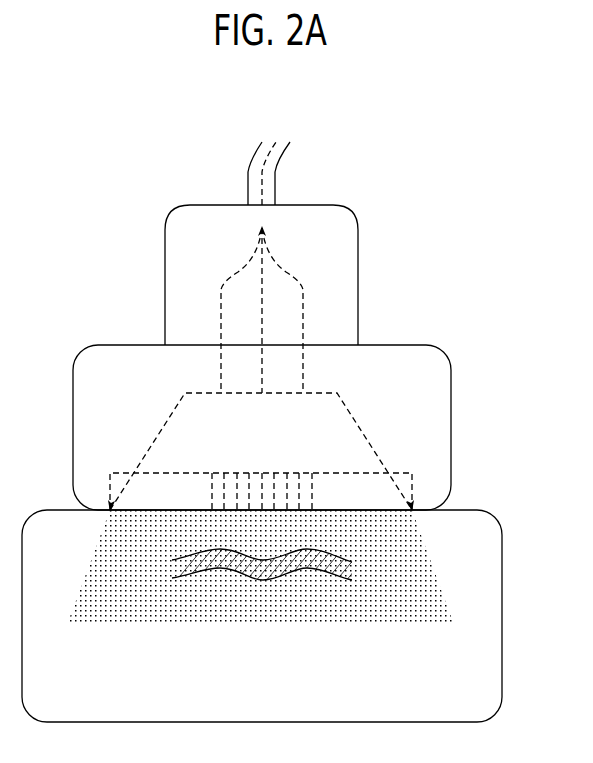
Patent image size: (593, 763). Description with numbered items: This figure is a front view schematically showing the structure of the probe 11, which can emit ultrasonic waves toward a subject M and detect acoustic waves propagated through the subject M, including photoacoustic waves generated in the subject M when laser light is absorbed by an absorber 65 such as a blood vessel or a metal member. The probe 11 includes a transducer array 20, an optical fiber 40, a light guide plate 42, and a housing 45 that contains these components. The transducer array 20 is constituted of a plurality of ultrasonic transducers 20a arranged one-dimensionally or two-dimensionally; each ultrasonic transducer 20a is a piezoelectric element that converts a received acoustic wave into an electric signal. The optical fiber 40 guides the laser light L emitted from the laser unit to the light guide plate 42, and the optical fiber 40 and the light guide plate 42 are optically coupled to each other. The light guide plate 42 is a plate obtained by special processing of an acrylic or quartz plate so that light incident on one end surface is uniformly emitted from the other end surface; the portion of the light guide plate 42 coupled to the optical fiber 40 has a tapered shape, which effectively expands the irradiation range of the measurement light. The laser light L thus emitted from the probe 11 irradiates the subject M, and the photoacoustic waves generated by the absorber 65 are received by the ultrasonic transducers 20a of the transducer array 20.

The probe 11 is at (125, 250).
The housing 45 is at (358, 292).
The optical fiber 40 is at (277, 253).
The light guide plate 42 is at (180, 398).
The transducer array 20 is at (125, 470).
The ultrasonic transducer 20a is at (277, 480).
The subject M is at (502, 617).
The laser light L is at (388, 622).
The absorber 65 is at (250, 580).